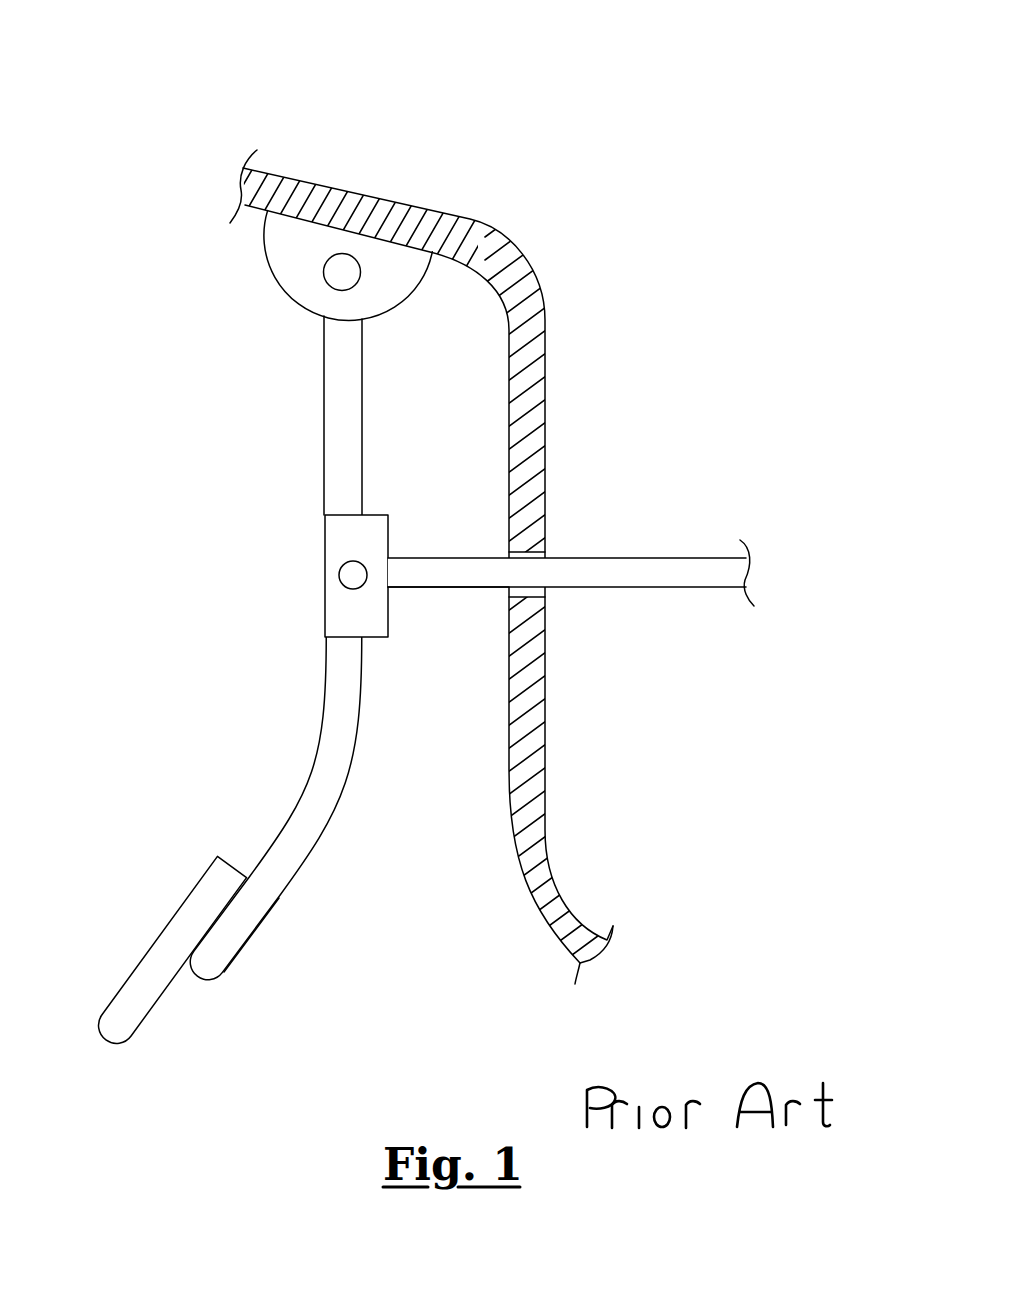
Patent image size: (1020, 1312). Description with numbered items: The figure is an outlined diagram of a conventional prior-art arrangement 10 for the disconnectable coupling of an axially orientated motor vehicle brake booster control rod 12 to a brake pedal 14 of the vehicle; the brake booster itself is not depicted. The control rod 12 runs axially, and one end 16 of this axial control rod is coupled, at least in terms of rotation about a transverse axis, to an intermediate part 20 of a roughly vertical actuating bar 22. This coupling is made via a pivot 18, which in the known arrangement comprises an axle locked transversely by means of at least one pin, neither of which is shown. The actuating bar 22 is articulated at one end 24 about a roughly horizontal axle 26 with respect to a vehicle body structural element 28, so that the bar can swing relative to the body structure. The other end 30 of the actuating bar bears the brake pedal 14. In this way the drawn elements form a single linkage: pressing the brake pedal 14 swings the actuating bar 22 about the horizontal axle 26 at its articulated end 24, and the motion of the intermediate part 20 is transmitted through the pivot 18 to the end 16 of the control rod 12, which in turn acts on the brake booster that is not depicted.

The arrangement 10 is at (420, 112).
The control rod 12 is at (643, 558).
The brake pedal 14 is at (132, 968).
The end of the control rod 16 is at (438, 579).
The pivot 18 is at (348, 577).
The intermediate part 20 is at (348, 533).
The actuating bar 22 is at (290, 766).
The end of the actuating bar 24 is at (338, 333).
The axle 26 is at (340, 273).
The vehicle body structural element 28 is at (533, 331).
The other end of the actuating bar 30 is at (256, 935).